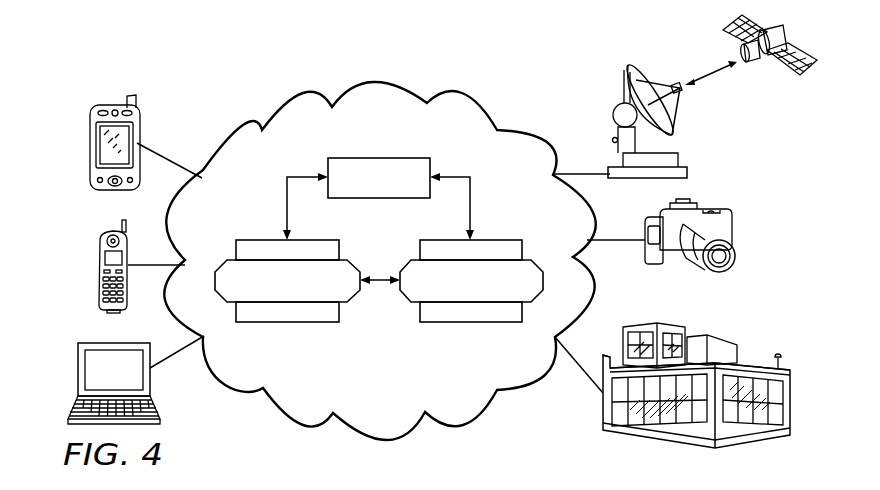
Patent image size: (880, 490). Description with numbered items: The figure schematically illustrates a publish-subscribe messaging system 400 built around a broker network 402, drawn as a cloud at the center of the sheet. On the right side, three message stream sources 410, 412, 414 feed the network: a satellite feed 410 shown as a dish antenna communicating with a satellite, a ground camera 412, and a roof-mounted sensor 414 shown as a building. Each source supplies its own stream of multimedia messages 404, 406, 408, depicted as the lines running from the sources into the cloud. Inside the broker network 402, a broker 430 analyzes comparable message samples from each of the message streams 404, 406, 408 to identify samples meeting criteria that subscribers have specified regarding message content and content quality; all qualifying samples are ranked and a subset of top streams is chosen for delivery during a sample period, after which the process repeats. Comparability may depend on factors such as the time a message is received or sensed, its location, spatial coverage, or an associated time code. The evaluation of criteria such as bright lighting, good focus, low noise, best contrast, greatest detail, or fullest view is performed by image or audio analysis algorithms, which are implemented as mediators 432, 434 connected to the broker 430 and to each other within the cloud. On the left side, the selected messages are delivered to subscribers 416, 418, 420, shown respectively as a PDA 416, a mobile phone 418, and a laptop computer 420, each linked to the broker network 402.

The publish-subscribe messaging system 400 is at (214, 83).
The broker network 402 is at (398, 375).
The stream of multimedia messages 404 is at (583, 172).
The stream of multimedia messages 406 is at (619, 242).
The stream of multimedia messages 408 is at (573, 388).
The message stream source 410 is at (687, 170).
The message stream source 412 is at (733, 227).
The message stream source 414 is at (790, 402).
The subscriber 416 is at (88, 142).
The subscriber 418 is at (100, 277).
The subscriber 420 is at (78, 370).
The broker 430 is at (380, 157).
The mediator 432 is at (277, 323).
The mediator 434 is at (481, 323).